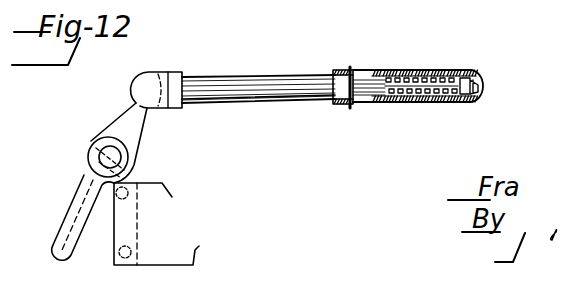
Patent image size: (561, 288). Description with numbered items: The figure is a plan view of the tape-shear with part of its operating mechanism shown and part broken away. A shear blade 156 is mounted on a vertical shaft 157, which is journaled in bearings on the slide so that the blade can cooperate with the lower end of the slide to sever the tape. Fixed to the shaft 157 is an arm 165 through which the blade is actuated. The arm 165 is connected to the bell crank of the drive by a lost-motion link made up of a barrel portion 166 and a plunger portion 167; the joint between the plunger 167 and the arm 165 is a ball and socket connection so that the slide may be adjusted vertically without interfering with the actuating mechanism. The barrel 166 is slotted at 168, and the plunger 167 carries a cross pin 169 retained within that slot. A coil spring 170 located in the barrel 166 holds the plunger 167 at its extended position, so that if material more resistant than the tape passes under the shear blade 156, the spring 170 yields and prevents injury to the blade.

The shear blade 156 is at (80, 205).
The vertical shaft 157 is at (107, 152).
The arm 165 is at (132, 127).
The barrel portion 166 is at (468, 69).
The plunger portion 167 is at (322, 44).
The slot 168 is at (370, 103).
The cross pin 169 is at (351, 106).
The coil spring 170 is at (453, 43).